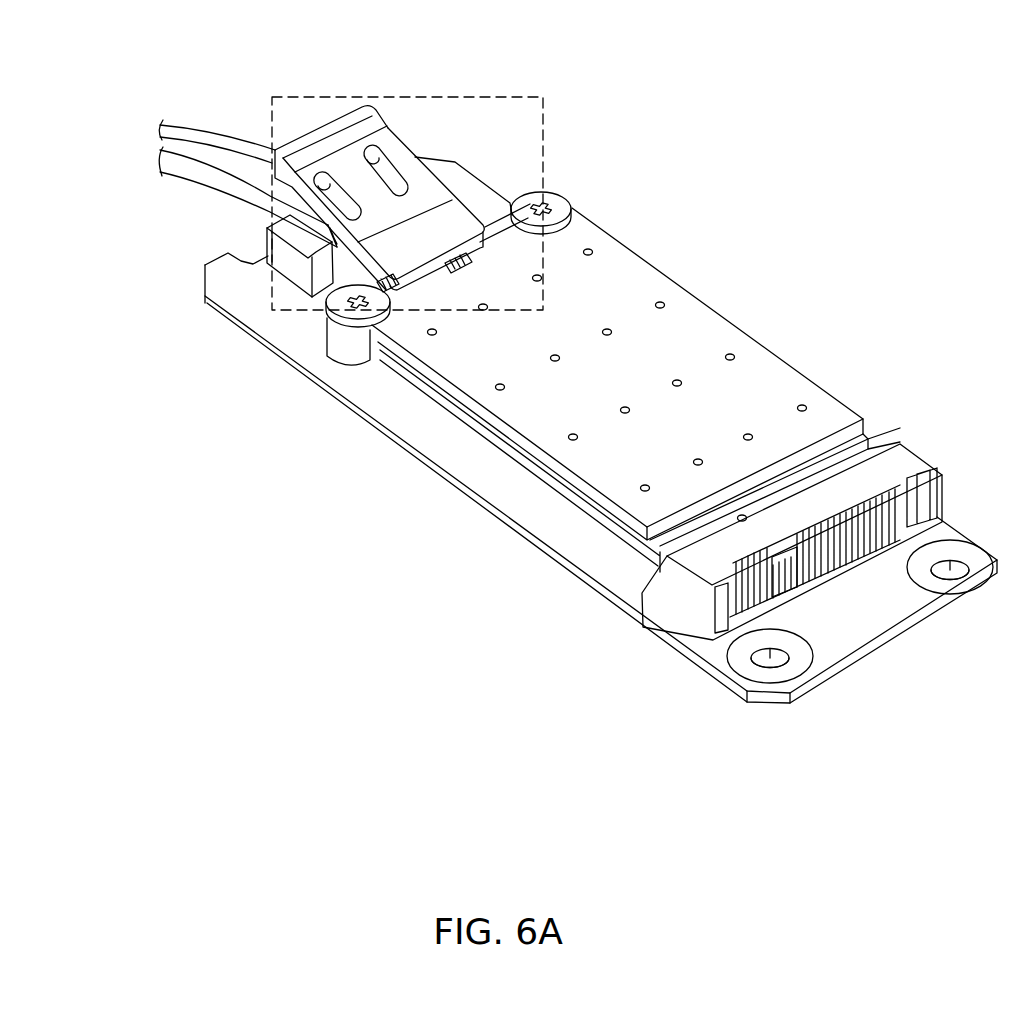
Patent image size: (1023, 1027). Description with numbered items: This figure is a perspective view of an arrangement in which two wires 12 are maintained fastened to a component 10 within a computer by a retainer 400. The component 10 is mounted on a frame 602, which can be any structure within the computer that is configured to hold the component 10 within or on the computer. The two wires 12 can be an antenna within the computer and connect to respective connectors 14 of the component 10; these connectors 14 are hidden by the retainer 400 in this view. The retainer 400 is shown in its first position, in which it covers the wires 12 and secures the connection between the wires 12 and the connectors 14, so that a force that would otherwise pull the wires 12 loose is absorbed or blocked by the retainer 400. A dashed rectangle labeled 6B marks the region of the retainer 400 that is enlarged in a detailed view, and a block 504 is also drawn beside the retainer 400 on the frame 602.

The component 10 is at (708, 322).
The wires 12 is at (206, 132).
The connectors 14 is at (465, 283).
The retainer 400 is at (357, 108).
The block 504 is at (298, 268).
The frame 602 is at (873, 631).
The detail view region 6B is at (449, 96).